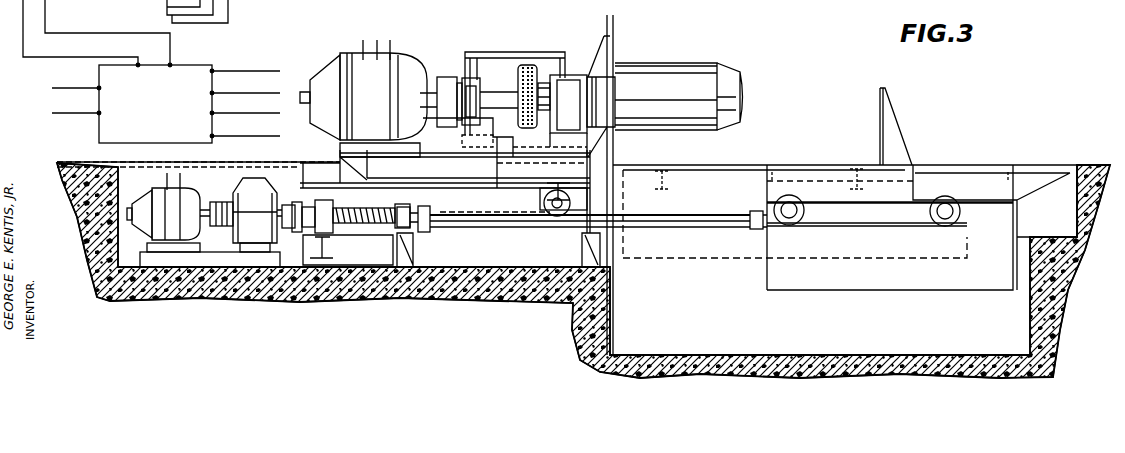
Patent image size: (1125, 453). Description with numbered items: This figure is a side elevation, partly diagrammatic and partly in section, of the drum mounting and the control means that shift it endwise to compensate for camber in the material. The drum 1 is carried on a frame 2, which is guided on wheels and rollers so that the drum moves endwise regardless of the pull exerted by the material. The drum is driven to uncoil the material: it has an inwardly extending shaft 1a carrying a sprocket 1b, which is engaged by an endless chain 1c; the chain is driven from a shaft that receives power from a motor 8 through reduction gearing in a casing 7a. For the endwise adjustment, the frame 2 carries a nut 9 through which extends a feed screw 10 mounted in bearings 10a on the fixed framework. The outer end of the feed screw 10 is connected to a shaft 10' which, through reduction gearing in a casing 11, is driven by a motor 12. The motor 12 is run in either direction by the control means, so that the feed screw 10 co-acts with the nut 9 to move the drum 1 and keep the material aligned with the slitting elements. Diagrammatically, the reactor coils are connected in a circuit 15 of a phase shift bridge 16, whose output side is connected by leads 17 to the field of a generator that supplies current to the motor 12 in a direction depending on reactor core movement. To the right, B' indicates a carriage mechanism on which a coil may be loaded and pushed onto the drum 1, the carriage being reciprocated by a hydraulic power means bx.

The drum 1 is at (727, 87).
The inwardly extending shaft 1a is at (565, 62).
The sprocket 1b is at (537, 77).
The endless chain 1c is at (517, 66).
The frame 2 is at (455, 175).
The casing 7a is at (487, 63).
The motor 8 is at (408, 66).
The nut 9 is at (372, 230).
The feed screw 10 is at (364, 232).
The shaft 10' is at (305, 224).
The bearings 10a is at (403, 210).
The casing 11 is at (260, 193).
The motor 12 is at (197, 193).
The circuit 15 is at (270, 68).
The phase shift bridge 16 is at (186, 68).
The leads 17 is at (82, 55).
The hydraulic power means bx is at (478, 224).
The coil loading mechanism B' is at (903, 126).